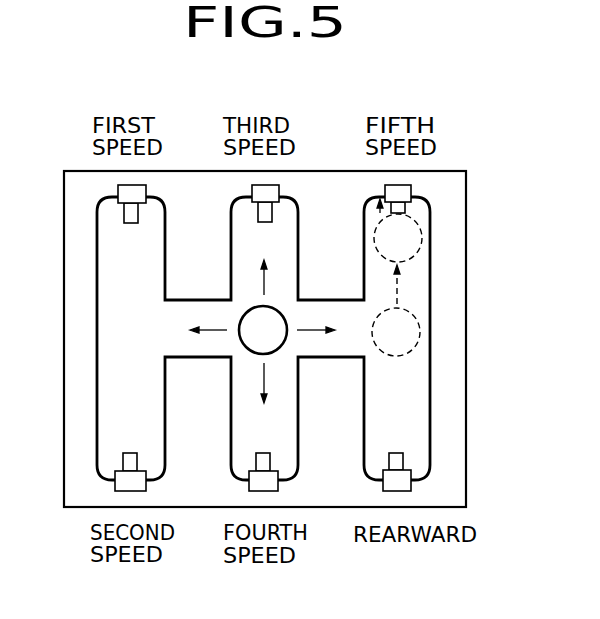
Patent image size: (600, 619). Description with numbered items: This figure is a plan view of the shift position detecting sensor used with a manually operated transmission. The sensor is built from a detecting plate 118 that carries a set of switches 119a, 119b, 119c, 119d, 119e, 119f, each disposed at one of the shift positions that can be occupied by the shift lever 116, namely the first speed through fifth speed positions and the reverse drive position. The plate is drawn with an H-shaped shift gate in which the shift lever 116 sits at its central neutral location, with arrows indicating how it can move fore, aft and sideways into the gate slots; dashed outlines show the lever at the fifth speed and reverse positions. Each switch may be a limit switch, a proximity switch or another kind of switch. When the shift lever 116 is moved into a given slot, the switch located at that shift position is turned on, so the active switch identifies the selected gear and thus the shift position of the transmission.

The shift lever 116 is at (246, 311).
The detecting plate 118 is at (448, 171).
The switch 119a is at (143, 192).
The switch 119b is at (140, 482).
The switch 119c is at (277, 190).
The switch 119d is at (273, 482).
The switch 119e is at (410, 189).
The switch 119f is at (405, 486).